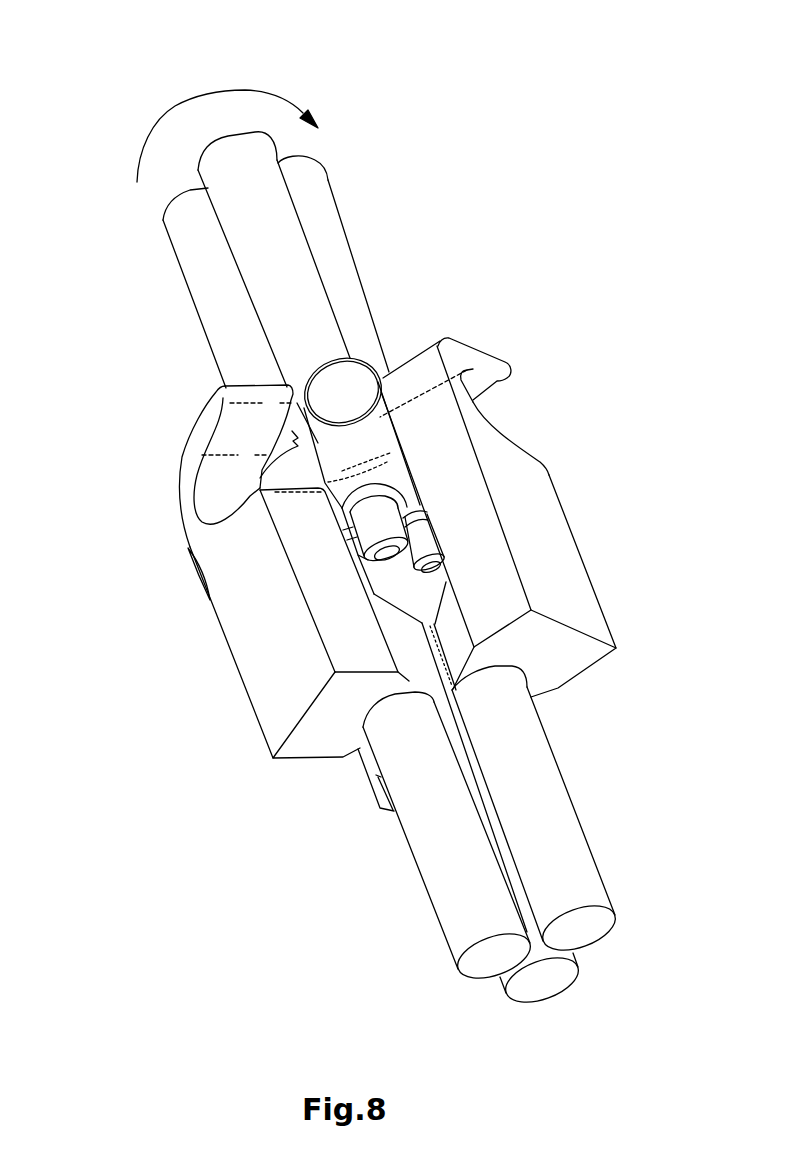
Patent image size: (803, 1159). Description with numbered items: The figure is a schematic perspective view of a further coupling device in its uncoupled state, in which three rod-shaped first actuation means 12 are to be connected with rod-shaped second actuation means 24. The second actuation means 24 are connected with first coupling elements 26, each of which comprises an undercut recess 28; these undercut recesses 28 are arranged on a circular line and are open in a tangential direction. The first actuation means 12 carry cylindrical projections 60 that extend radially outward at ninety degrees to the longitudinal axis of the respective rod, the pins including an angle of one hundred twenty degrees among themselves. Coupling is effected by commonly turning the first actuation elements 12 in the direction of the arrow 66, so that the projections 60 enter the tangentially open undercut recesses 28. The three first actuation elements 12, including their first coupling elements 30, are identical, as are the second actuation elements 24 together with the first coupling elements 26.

The first actuation means 12 is at (248, 208).
The second actuation means 24 is at (543, 813).
The first coupling elements 26 is at (262, 604).
The undercut recess 28 is at (210, 482).
The first coupling elements 30 is at (375, 347).
The cylindrical projections 60 is at (353, 397).
The arrow 66 is at (283, 98).